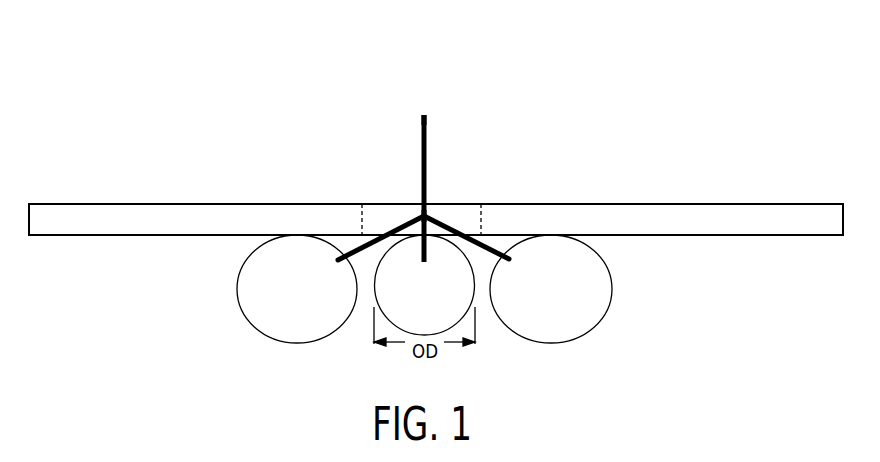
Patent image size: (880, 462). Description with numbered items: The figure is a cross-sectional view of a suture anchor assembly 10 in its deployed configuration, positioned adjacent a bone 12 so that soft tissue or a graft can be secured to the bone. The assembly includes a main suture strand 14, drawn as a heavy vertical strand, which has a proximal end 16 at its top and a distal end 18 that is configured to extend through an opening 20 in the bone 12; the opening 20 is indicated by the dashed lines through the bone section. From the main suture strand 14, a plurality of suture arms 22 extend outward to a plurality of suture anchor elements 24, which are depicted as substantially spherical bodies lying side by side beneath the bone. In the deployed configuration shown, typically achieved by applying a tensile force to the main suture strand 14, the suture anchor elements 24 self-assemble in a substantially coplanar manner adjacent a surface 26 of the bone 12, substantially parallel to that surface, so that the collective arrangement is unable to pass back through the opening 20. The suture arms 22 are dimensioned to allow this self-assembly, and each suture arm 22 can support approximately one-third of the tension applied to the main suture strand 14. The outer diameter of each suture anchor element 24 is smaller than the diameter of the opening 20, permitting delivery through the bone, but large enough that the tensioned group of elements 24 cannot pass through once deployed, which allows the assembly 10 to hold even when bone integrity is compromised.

The suture anchor assembly 10 is at (383, 167).
The bone 12 is at (768, 204).
The main suture strand 14 is at (428, 130).
The proximal end 16 is at (423, 115).
The distal end 18 is at (428, 212).
The opening 20 is at (466, 204).
The suture arms 22 is at (420, 216).
The suture anchor elements 24 is at (307, 299).
The surface 26 is at (197, 235).